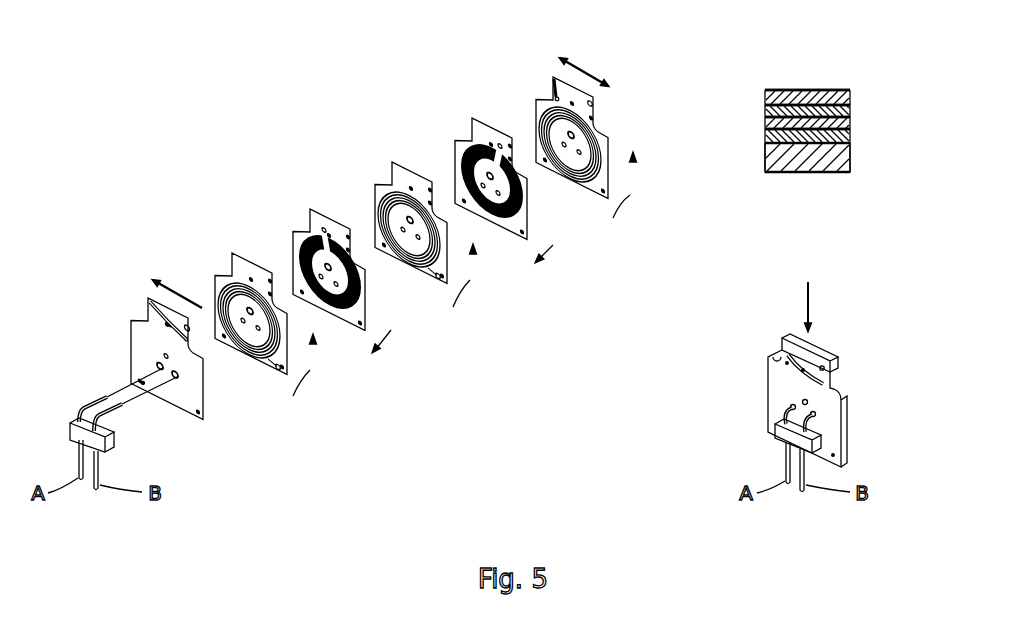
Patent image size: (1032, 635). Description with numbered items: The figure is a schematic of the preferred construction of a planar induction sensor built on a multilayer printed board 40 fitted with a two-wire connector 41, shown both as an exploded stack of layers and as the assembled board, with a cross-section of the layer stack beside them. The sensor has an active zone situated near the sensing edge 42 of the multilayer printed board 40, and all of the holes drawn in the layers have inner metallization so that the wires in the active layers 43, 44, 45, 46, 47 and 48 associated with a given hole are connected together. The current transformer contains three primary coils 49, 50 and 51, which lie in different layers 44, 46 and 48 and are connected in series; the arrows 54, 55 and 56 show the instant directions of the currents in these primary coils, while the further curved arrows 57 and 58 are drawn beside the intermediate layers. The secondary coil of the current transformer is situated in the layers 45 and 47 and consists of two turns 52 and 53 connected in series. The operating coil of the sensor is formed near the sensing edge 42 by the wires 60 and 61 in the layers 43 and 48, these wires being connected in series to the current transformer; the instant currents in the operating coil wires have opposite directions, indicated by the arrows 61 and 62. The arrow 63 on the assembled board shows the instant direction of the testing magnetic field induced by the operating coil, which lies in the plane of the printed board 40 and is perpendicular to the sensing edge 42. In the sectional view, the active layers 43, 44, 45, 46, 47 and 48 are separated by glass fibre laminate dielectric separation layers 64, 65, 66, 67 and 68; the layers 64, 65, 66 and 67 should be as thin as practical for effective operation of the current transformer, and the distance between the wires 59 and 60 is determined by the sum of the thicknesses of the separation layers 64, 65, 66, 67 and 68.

The multilayer printed board 40 is at (782, 395).
The two-wire connector 41 is at (777, 440).
The sensing edge 42 is at (824, 358).
The active layer 43 is at (172, 407).
The active layer 44 is at (250, 357).
The active layer 45 is at (332, 317).
The active layer 46 is at (413, 277).
The active layer 47 is at (493, 230).
The active layer 48 is at (573, 187).
The primary coil 49 is at (225, 285).
The primary coil 50 is at (387, 192).
The primary coil 51 is at (540, 107).
The secondary coil turn 52 is at (310, 233).
The secondary coil turn 53 is at (470, 137).
The arrow 54 is at (313, 340).
The arrow 55 is at (473, 250).
The arrow 56 is at (633, 158).
The winding direction arrow 57 is at (391, 290).
The winding direction arrow 58 is at (550, 200).
The wire 59 is at (152, 302).
The wire 60 is at (555, 77).
The wire 61 is at (176, 291).
The arrow 62 is at (587, 68).
The arrow 63 is at (810, 302).
The separation dielectric layer 64 is at (848, 100).
The separation dielectric layer 65 is at (848, 112).
The separation dielectric layer 66 is at (848, 128).
The separation dielectric layer 67 is at (850, 138).
The separation dielectric layer 68 is at (850, 155).